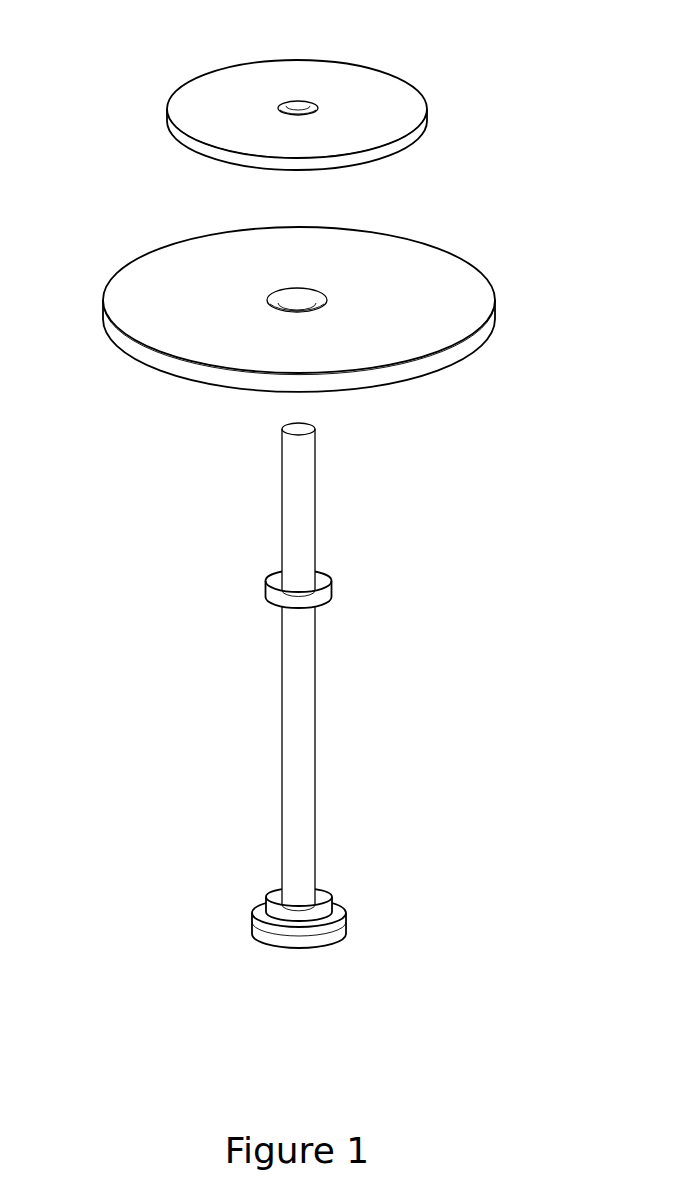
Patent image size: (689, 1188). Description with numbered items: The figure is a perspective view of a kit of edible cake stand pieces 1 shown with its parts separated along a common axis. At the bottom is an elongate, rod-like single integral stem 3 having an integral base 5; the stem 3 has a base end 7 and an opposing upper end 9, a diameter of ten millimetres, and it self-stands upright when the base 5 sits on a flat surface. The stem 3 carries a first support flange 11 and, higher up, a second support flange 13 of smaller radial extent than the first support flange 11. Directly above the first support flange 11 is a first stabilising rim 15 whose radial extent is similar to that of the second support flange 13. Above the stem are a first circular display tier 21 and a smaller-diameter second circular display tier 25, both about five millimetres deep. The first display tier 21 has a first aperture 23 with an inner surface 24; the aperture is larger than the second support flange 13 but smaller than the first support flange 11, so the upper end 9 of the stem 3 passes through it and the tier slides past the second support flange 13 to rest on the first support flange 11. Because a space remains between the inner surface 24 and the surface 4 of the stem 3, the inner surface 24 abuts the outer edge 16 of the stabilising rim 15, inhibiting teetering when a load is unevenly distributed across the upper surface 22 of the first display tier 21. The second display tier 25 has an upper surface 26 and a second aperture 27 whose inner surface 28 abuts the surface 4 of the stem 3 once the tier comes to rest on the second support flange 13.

The kit of edible cake stand pieces 1 is at (103, 102).
The stem 3 is at (280, 765).
The surface of the stem 4 is at (307, 862).
The base 5 is at (297, 950).
The base end 7 is at (358, 922).
The upper end 9 is at (323, 430).
The first support flange 11 is at (252, 912).
The second support flange 13 is at (265, 588).
The first stabilising rim 15 is at (327, 895).
The outer edge of the stabilising rim 16 is at (340, 912).
The first circular display tier 21 is at (437, 248).
The upper surface of the first display tier 22 is at (358, 250).
The first aperture 23 is at (327, 297).
The inner surface of the first aperture 24 is at (278, 298).
The second circular display tier 25 is at (325, 60).
The upper surface of the second display tier 26 is at (203, 88).
The second aperture 27 is at (318, 100).
The inner surface of the second aperture 28 is at (297, 107).